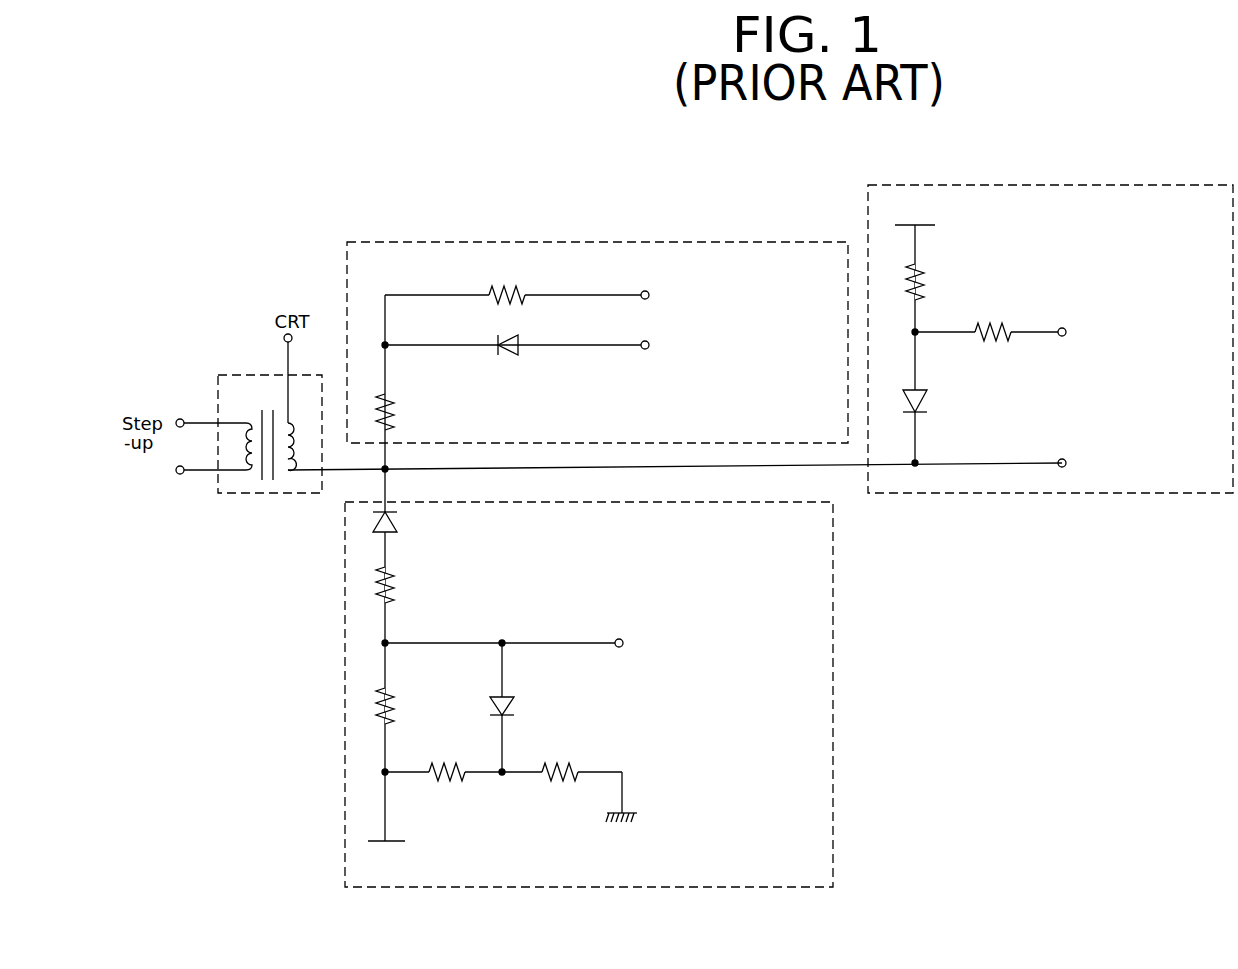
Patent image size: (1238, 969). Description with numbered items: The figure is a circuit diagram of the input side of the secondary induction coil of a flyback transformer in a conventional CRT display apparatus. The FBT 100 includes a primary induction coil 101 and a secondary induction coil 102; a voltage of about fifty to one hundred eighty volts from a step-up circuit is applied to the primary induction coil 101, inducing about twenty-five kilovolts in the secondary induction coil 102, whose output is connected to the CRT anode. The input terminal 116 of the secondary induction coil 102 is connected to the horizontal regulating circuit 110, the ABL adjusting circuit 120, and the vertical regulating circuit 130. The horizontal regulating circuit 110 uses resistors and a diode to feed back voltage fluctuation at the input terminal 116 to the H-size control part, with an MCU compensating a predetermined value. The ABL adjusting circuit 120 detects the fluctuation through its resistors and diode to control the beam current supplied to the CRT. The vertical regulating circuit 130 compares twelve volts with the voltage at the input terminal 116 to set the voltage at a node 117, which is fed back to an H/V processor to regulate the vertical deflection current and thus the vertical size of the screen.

The FBT 100 is at (268, 424).
The primary induction coil 101 is at (252, 471).
The secondary induction coil 102 is at (292, 471).
The horizontal regulating circuit 110 is at (610, 242).
The input terminal 116 is at (389, 472).
The node 117 is at (388, 640).
The ABL adjusting circuit 120 is at (1072, 185).
The vertical regulating circuit 130 is at (632, 678).